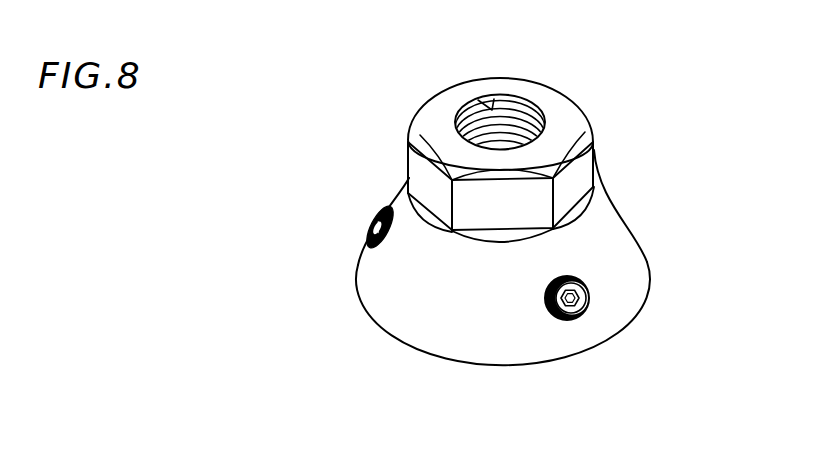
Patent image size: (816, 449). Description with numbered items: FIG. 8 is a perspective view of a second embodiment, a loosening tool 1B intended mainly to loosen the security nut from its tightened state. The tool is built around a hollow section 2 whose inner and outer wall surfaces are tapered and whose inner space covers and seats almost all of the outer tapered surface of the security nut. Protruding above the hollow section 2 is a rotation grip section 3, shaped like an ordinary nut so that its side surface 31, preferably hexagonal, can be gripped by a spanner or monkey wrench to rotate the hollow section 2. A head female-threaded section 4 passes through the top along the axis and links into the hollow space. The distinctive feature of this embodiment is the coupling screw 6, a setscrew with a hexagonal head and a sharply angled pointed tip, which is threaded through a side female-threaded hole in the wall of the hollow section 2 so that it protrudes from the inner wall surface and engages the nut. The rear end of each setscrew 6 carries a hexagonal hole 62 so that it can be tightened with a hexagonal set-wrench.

The loosening tool 1B is at (334, 86).
The hollow section 2 is at (626, 222).
The rotation grip section 3 is at (550, 85).
The side surface 31 is at (597, 157).
The head female-threaded section 4 is at (496, 101).
The coupling screw 6 is at (373, 220).
The hexagonal hole 62 is at (578, 311).